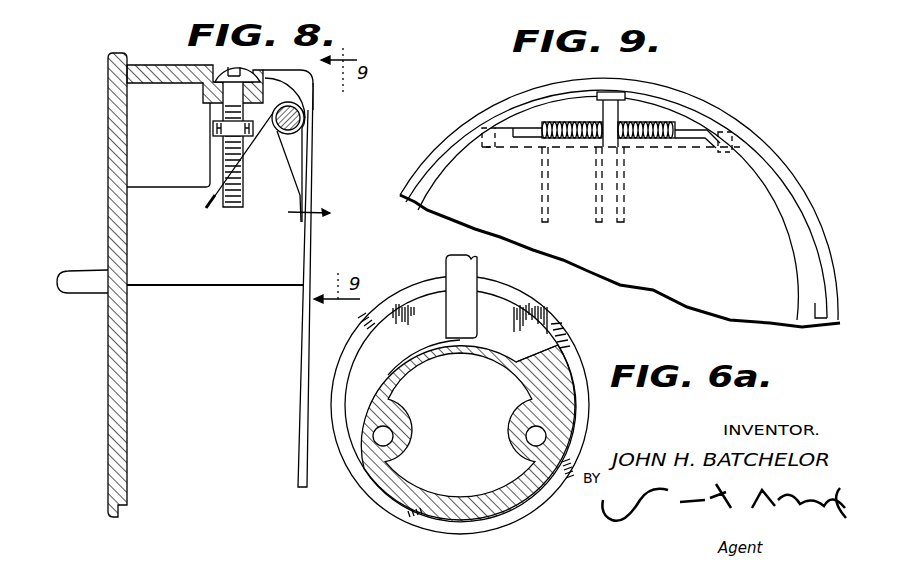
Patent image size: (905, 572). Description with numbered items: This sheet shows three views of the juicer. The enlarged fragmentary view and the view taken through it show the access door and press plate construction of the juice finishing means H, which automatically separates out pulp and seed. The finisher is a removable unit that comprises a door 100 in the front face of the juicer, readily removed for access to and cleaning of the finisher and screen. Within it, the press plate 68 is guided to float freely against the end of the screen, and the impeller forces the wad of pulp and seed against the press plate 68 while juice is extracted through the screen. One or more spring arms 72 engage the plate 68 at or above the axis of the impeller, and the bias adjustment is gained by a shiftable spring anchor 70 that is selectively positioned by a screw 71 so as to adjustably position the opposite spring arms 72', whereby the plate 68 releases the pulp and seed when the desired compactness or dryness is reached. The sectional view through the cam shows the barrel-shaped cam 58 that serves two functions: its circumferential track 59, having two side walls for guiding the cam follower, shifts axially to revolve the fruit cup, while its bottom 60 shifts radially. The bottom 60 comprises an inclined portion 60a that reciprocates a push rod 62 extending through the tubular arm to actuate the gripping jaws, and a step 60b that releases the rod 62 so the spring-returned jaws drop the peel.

In FIG. 8, the door 100 is at (108, 426).
In FIG. 9, the door 100 is at (788, 179).
In FIG. 8, the screw 71 is at (241, 67).
In FIG. 9, the screw 71 is at (611, 119).
In FIG. 8, the spring anchor 70 is at (213, 128).
In FIG. 8, the spring arm 72 is at (258, 178).
In FIG. 9, the spring arm 72 is at (608, 188).
In FIG. 8, the spring arm 72' is at (200, 219).
In FIG. 9, the spring arm 72' is at (611, 181).
In FIG. 8, the press plate 68 is at (316, 252).
In FIG. 9, the press plate 68 is at (734, 282).
In FIG. 8, the juice finishing means H is at (317, 152).
In FIG. 9, the juice finishing means H is at (740, 124).
In FIG. 6a, the push rod 62 is at (456, 268).
In FIG. 6a, the bottom 60 is at (493, 340).
In FIG. 6a, the inclined portion 60a is at (388, 375).
In FIG. 6a, the step 60b is at (560, 348).
In FIG. 6a, the cam 58 is at (594, 405).
In FIG. 6a, the track 59 is at (356, 468).